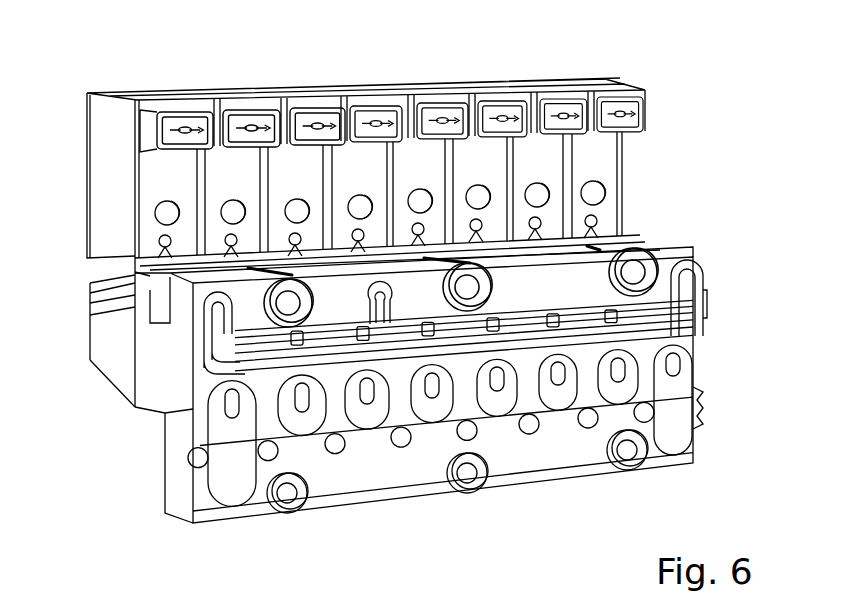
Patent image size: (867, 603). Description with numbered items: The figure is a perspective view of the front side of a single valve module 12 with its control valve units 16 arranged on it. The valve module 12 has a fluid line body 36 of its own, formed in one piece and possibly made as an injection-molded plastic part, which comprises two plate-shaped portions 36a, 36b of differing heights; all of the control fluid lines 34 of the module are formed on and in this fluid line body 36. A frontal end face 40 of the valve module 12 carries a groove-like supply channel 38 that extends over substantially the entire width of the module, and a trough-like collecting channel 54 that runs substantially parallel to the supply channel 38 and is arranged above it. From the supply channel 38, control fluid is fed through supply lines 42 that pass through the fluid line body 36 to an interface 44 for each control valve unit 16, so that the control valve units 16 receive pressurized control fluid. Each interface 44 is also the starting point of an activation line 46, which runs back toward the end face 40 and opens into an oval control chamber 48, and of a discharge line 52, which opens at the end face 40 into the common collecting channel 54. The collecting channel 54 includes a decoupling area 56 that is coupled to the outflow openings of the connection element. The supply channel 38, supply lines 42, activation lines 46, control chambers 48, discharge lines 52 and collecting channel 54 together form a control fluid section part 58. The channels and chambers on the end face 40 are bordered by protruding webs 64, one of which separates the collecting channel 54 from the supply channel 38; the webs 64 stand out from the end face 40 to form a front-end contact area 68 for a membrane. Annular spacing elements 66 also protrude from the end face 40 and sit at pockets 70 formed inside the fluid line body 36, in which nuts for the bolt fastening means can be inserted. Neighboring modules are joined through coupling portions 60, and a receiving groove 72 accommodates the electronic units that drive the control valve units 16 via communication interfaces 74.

The valve module 12 is at (696, 140).
The control valve unit 16 is at (110, 118).
The communication interface 74 is at (174, 118).
The pocket 70 is at (448, 258).
The receiving groove 72 is at (160, 289).
The fluid line body 36 is at (170, 392).
The plate-shaped portion 36a is at (177, 500).
The plate-shaped portion 36b is at (133, 363).
The interface 44 is at (120, 346).
The control fluid line 34 is at (712, 348).
The supply line 42 is at (425, 345).
The activation line 46 is at (235, 400).
The front-end contact area 68 is at (497, 453).
The end face 40 is at (546, 461).
The supply channel 38 is at (642, 340).
The control fluid section part 58 is at (716, 452).
The collecting channel 54 is at (637, 316).
The control chamber 48 is at (300, 460).
The spacing element 66 is at (612, 265).
The web 64 is at (203, 350).
The decoupling area 56 is at (375, 292).
The discharge line 52 is at (608, 308).
The coupling portion 60 is at (704, 266).